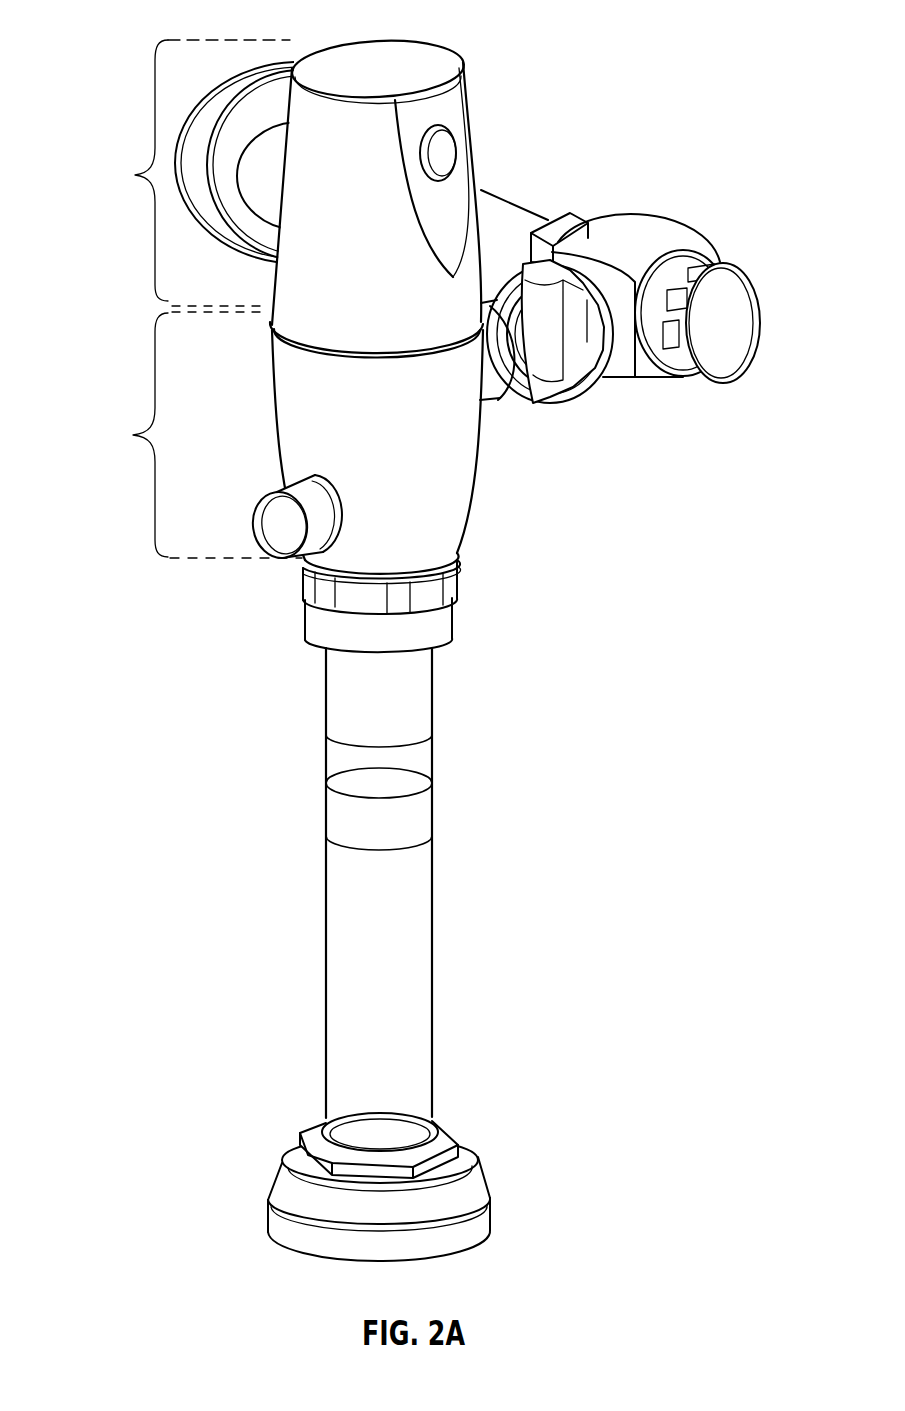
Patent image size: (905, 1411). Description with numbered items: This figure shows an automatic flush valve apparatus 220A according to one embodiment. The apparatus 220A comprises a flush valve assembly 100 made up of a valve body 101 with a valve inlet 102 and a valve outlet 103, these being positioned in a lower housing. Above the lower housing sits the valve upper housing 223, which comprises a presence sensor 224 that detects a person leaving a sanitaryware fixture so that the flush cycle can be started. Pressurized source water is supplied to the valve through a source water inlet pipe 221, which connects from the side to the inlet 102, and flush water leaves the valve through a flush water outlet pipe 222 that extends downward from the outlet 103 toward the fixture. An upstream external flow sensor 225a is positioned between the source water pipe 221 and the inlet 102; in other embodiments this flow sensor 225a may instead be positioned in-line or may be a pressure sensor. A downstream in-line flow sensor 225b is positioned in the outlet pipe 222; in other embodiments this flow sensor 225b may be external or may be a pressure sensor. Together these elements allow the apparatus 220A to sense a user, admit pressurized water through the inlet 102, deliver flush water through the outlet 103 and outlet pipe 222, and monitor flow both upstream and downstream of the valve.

The automatic flush valve apparatus 220A is at (614, 43).
The valve upper housing 223 is at (284, 197).
The presence sensor 224 is at (443, 153).
The source water inlet pipe 221 is at (517, 200).
The upstream external flow sensor 225a is at (537, 340).
The flush valve assembly 100 is at (318, 476).
The flush valve body 101 is at (298, 395).
The inlet 102 is at (493, 405).
The outlet 103 is at (457, 578).
The downstream in-line flow sensor 225b is at (413, 820).
The flush water outlet pipe 222 is at (437, 970).